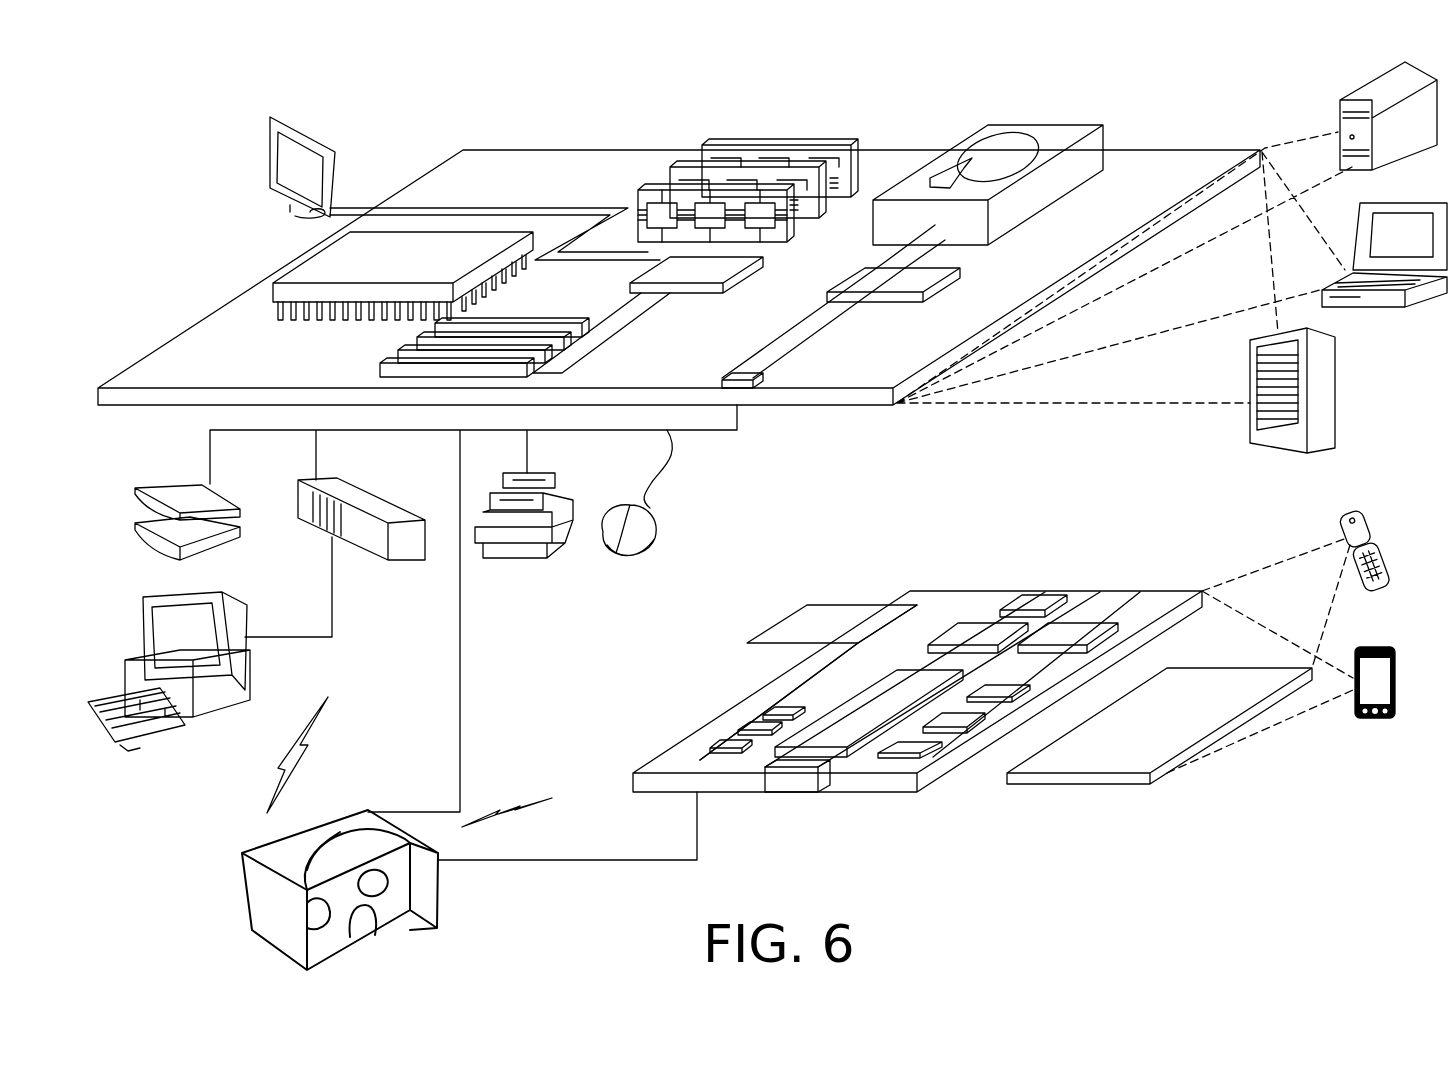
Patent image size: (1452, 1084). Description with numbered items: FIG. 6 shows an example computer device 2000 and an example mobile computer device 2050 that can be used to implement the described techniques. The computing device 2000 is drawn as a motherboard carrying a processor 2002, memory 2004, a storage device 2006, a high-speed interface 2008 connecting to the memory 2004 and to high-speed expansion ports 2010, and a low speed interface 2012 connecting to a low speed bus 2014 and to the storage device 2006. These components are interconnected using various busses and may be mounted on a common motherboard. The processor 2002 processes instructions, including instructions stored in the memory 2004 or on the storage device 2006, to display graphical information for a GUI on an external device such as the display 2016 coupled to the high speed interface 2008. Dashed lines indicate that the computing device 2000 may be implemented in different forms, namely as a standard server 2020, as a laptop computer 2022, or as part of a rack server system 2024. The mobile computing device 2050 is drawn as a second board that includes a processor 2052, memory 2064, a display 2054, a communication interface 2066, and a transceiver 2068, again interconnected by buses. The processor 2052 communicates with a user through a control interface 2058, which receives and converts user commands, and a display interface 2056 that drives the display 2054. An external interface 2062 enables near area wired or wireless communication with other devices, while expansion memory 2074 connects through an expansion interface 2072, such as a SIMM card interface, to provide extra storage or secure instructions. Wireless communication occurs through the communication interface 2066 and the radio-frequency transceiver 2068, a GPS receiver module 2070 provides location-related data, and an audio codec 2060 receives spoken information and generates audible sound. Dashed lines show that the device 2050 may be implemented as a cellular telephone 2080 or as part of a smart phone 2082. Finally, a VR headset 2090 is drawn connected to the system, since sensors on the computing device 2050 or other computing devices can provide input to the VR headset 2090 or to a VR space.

The computer device 2000 is at (410, 96).
The processor 2002 is at (298, 263).
The memory 2004 is at (782, 145).
The storage device 2006 is at (1032, 125).
The high-speed interface 2008 is at (715, 292).
The high-speed expansion ports 2010 is at (407, 350).
The low speed interface 2012 is at (866, 276).
The low speed bus 2014 is at (742, 373).
The display 2016 is at (274, 117).
The standard server 2020 is at (1365, 94).
The laptop computer 2022 is at (1422, 203).
The rack server system 2024 is at (1337, 392).
The mobile computer device 2050 is at (1240, 779).
The processor 2052 is at (835, 723).
The display 2054 is at (1200, 686).
The display interface 2056 is at (927, 748).
The control interface 2058 is at (963, 717).
The audio codec 2060 is at (1000, 691).
The external interface 2062 is at (794, 778).
The memory 2064 is at (740, 725).
The communication interface 2066 is at (968, 628).
The transceiver 2068 is at (1078, 628).
The GPS receiver module 2070 is at (1035, 603).
The expansion interface 2072 is at (897, 605).
The expansion memory 2074 is at (807, 605).
The cellular telephone 2080 is at (1360, 508).
The smart phone 2082 is at (1367, 645).
The VR headset 2090 is at (450, 869).